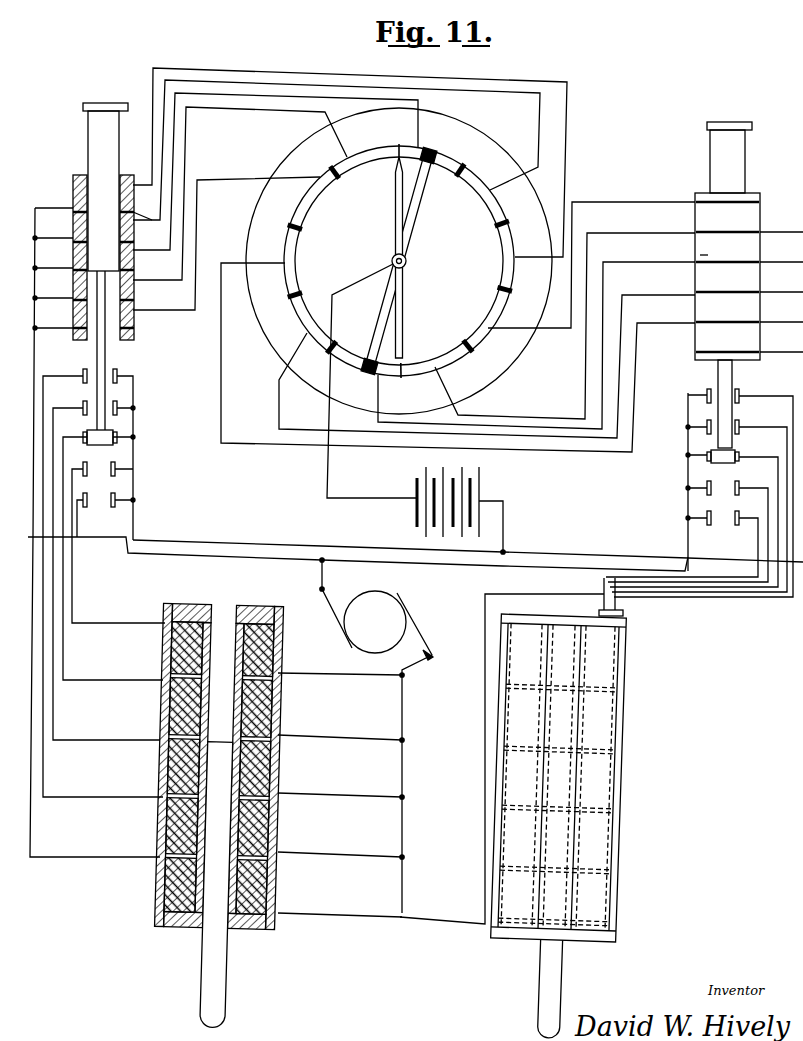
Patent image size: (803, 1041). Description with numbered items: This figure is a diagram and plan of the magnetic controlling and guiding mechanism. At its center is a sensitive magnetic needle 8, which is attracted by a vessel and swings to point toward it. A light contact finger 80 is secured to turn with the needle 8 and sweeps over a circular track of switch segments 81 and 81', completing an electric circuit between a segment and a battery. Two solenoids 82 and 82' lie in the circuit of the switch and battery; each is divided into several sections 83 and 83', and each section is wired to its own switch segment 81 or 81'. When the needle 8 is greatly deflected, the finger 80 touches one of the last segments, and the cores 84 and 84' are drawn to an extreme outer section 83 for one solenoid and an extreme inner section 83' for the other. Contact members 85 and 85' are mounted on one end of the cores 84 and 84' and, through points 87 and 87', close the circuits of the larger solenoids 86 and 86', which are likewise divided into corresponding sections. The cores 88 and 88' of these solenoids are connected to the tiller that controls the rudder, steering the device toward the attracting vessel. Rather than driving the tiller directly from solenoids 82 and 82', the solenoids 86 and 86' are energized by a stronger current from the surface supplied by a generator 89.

The magnetic needle 8 is at (399, 197).
The contact finger 80 is at (414, 204).
The switch segment 81 is at (399, 261).
The switch segment 81' is at (379, 261).
The solenoid 82 is at (83, 257).
The solenoid section 83 is at (149, 232).
The core 84 is at (86, 266).
The contact member 85 is at (122, 407).
The contact points 87 is at (124, 481).
The solenoid 82' is at (704, 276).
The solenoid section 83' is at (678, 261).
The core 84' is at (707, 285).
The contact member 85' is at (692, 426).
The contact points 87' is at (692, 503).
The solenoid 86 is at (197, 765).
The solenoid 86' is at (583, 779).
The core 88 is at (232, 885).
The core 88' is at (569, 990).
The generator 89 is at (376, 736).